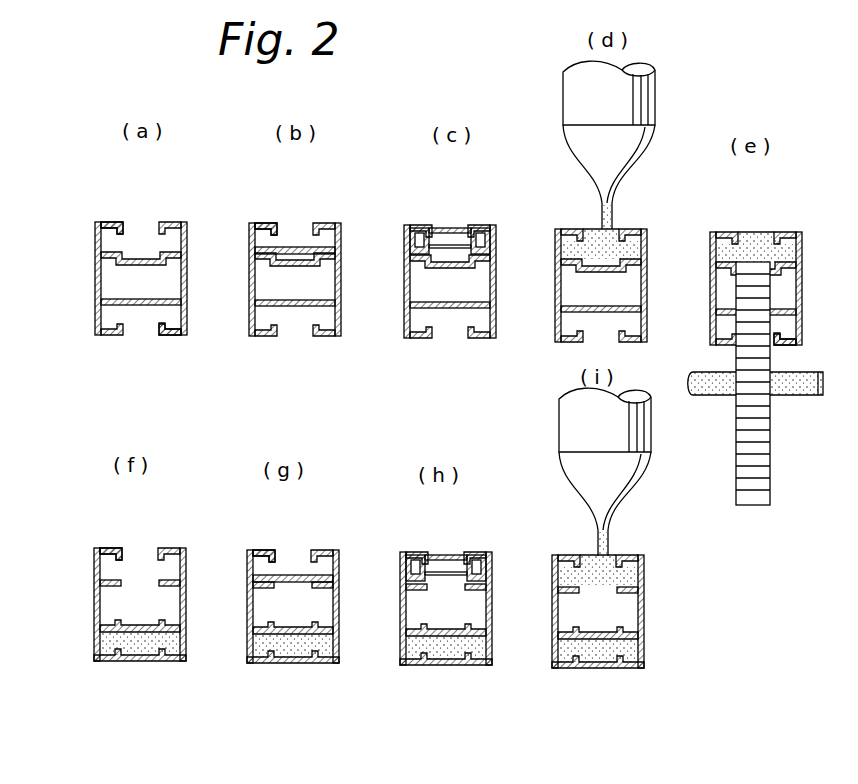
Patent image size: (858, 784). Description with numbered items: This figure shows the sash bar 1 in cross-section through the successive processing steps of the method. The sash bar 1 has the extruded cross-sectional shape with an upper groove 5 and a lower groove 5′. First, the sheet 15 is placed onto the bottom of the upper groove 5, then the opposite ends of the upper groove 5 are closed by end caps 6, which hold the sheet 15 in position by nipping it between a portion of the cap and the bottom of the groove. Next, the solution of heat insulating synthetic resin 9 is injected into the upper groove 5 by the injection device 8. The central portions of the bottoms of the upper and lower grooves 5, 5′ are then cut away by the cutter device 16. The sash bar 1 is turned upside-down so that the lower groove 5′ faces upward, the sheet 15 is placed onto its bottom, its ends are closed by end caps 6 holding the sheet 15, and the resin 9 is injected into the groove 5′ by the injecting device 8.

The sash bar 1 is at (94, 270).
The upper groove 5 is at (108, 236).
The lower groove 5′ is at (165, 315).
The end caps 6 is at (448, 240).
The injection device 8 is at (654, 90).
The heat insulating synthetic resin 9 is at (612, 214).
The sheet 15 is at (300, 252).
The cutter device 16 is at (766, 433).